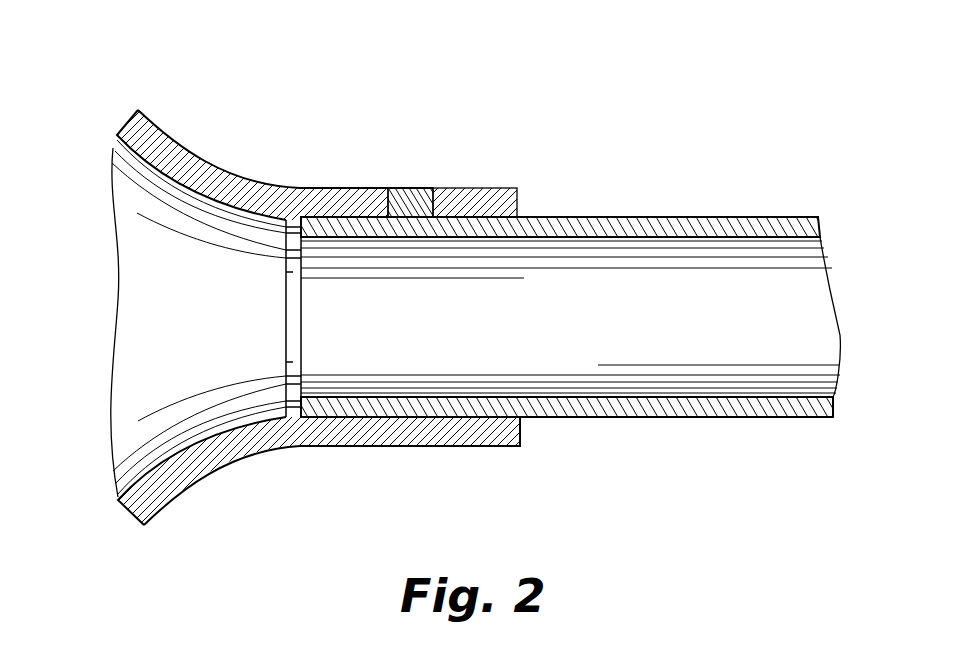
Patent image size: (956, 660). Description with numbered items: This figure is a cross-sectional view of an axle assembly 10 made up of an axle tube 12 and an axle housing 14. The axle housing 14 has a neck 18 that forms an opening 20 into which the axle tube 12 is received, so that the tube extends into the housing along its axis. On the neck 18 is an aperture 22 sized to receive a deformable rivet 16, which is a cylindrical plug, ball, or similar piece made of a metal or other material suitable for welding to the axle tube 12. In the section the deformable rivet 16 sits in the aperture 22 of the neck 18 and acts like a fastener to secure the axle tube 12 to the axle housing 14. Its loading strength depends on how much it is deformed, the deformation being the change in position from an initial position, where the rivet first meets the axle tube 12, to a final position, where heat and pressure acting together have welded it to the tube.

The axle assembly 10 is at (695, 166).
The axle tube 12 is at (567, 218).
The axle housing 14 is at (217, 180).
The deformable rivet 16 is at (393, 188).
The neck 18 is at (485, 188).
The opening 20 is at (528, 330).
The aperture 22 is at (421, 188).